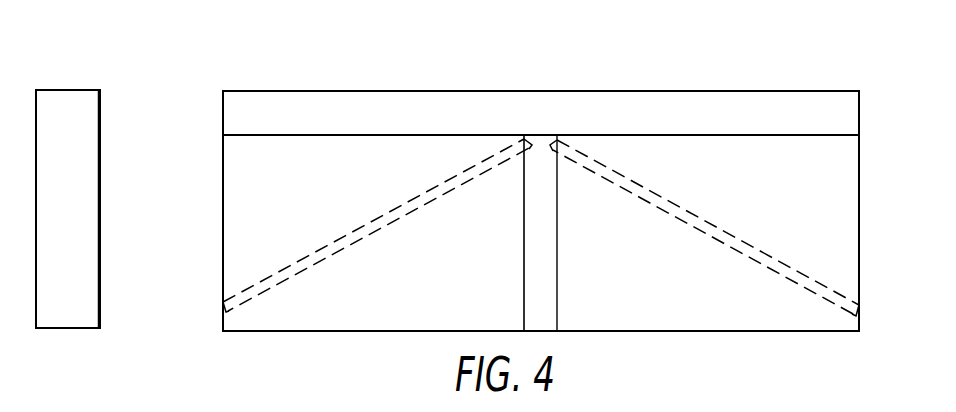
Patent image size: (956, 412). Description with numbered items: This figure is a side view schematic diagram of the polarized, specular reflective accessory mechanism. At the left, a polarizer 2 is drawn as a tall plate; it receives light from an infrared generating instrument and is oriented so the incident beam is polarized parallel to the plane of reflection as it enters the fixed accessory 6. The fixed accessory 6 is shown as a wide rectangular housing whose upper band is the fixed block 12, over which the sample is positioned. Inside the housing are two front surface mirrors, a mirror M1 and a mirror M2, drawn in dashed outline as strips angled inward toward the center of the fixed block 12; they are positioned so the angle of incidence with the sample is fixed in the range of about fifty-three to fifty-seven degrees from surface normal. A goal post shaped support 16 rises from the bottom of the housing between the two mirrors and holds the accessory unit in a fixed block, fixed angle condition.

The polarizer 2 is at (69, 329).
The fixed accessory 6 is at (557, 64).
The fixed block 12 is at (368, 91).
The goal post shaped support 16 is at (557, 263).
The mirror M1 is at (384, 214).
The mirror M2 is at (700, 222).